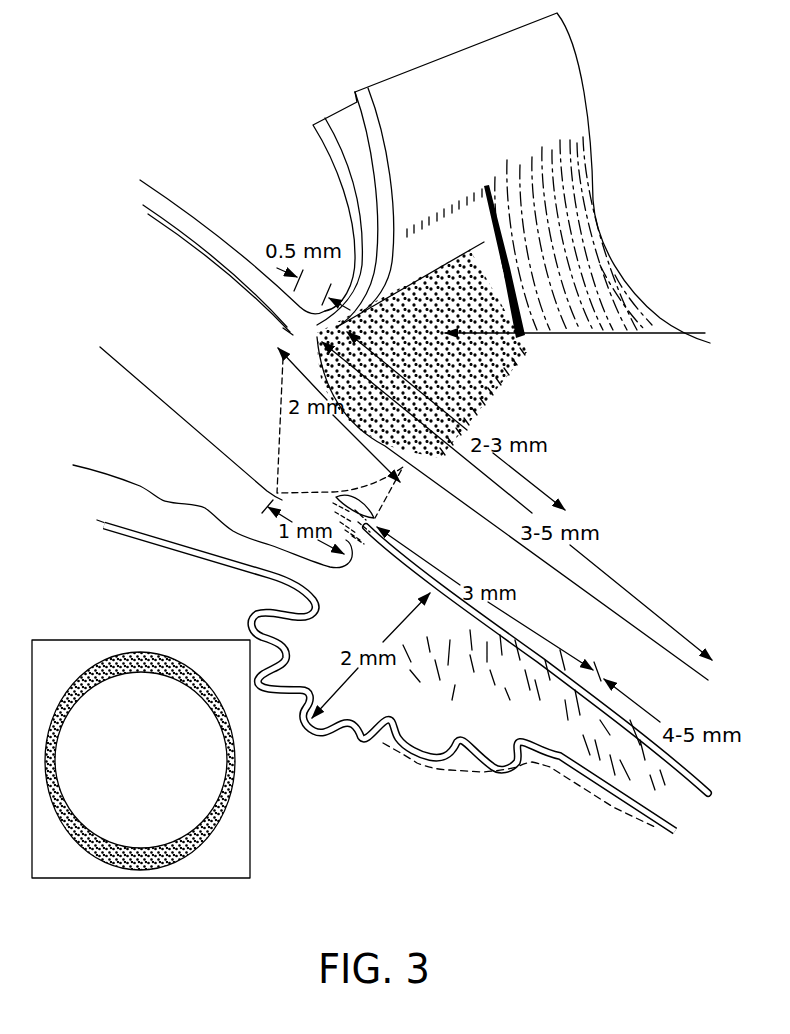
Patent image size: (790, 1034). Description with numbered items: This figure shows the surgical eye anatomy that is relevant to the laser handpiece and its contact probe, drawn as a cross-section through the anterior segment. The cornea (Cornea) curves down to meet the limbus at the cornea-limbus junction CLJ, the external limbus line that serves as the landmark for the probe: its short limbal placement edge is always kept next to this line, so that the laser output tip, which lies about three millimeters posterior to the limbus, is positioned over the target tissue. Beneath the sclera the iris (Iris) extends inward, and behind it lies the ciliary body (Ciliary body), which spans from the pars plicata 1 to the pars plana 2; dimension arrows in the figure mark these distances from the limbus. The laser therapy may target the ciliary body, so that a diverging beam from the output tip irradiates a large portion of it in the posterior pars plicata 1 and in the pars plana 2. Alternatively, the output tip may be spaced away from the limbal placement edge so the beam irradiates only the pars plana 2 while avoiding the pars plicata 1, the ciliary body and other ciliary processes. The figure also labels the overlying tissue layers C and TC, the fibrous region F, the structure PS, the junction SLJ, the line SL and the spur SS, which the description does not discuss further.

The cornea Cornea is at (232, 230).
The conjunctiva C is at (343, 115).
The Tenon's capsule TC is at (390, 95).
The fibers / flap F is at (535, 207).
The posterior sclera PS is at (493, 268).
The cornea-limbus junction CLJ is at (283, 322).
The sclerolimbal junction SLJ is at (503, 390).
The scleral lip SL is at (262, 463).
The scleral spur SS is at (377, 537).
The iris Iris is at (95, 502).
The ciliary body Ciliary body is at (386, 675).
The pars plicata 1 is at (450, 683).
The pars plana 2 is at (632, 800).